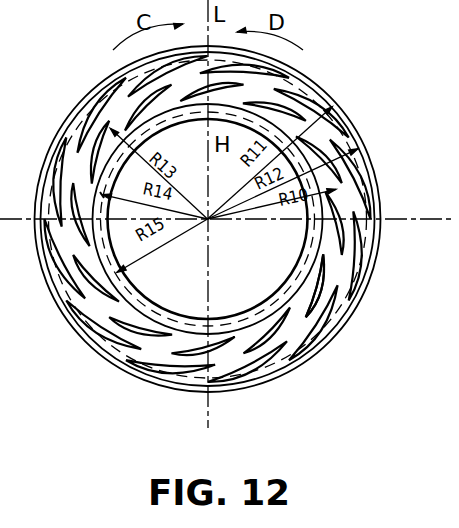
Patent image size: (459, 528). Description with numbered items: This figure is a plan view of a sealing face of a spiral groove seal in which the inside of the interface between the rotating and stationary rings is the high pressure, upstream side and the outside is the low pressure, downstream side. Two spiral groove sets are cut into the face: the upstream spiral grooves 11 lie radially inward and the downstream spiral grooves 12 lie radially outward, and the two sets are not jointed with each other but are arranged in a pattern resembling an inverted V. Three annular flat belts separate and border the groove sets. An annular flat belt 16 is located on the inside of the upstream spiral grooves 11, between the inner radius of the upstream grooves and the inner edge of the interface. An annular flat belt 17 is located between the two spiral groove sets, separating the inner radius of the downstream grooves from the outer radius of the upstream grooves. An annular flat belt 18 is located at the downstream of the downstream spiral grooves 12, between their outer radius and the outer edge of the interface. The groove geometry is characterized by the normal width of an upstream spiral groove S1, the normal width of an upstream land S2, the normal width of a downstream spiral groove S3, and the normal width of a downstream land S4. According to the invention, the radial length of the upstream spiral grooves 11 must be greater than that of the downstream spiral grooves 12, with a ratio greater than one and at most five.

The upstream spiral grooves 11 is at (98, 150).
The downstream spiral grooves 12 is at (157, 78).
The annular flat belt 16 is at (368, 215).
The annular flat belt 17 is at (322, 200).
The annular flat belt 18 is at (320, 140).
The normal width of an upstream spiral groove S1 is at (330, 280).
The normal width of an upstream land S2 is at (320, 302).
The normal width of a downstream spiral groove S3 is at (320, 327).
The normal width of a downstream land S4 is at (288, 348).